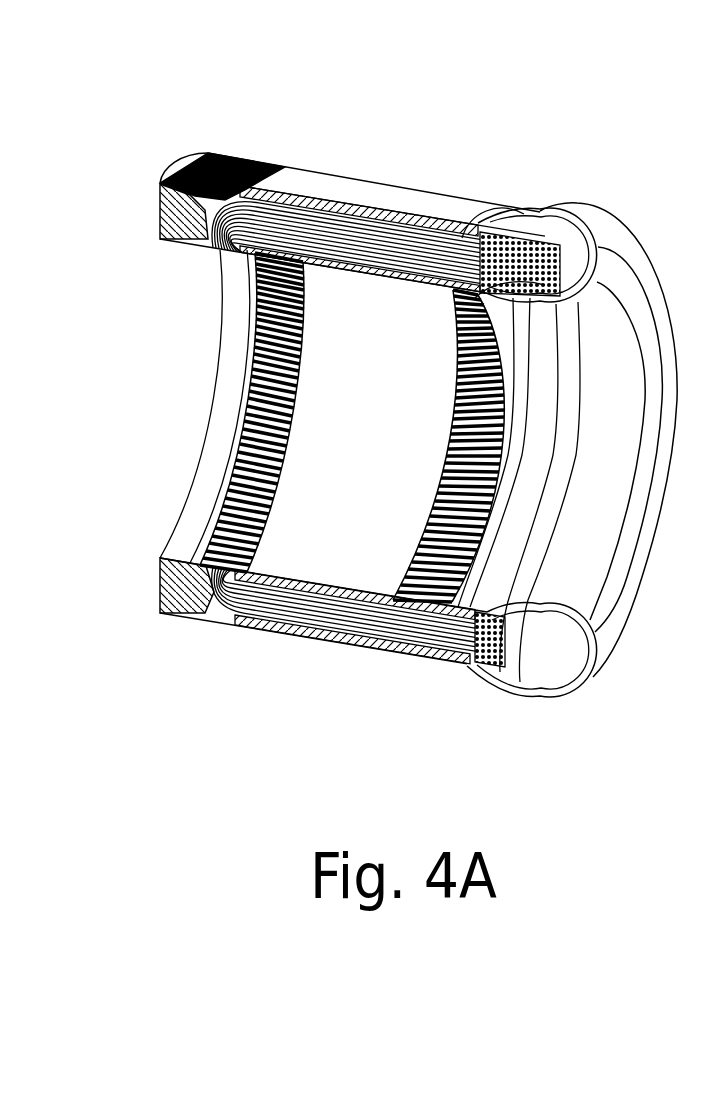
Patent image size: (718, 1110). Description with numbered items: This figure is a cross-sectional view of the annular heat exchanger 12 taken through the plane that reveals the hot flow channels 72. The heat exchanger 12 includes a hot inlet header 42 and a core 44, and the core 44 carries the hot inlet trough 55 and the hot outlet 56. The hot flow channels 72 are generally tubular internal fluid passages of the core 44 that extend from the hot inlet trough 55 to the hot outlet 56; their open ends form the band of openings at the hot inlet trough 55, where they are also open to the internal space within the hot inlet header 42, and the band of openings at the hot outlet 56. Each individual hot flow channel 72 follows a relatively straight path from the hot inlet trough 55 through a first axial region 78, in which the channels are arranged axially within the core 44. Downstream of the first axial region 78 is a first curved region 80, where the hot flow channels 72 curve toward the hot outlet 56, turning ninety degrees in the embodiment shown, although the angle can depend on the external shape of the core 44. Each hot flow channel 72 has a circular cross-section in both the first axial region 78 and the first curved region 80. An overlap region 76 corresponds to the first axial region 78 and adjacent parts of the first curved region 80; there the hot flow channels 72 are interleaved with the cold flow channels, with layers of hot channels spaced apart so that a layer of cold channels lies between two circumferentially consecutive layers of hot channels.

The annular heat exchanger 12 is at (493, 114).
The hot inlet header 42 is at (672, 260).
The core 44 is at (444, 186).
The hot inlet trough 55 is at (493, 642).
The hot outlet 56 is at (238, 152).
The hot flow channels 72 is at (398, 228).
The overlap region 76 is at (348, 212).
The first axial region 78 is at (318, 210).
The first curved region 80 is at (210, 247).